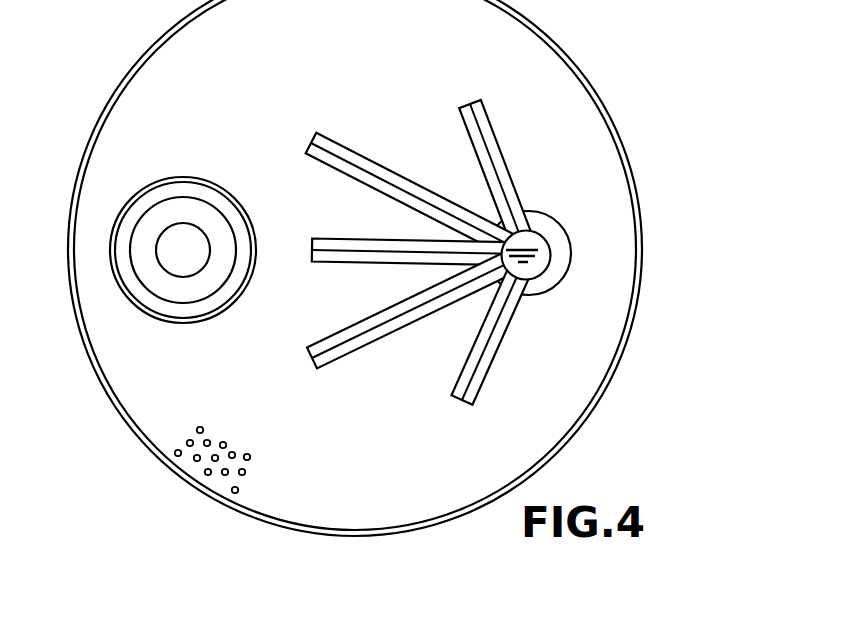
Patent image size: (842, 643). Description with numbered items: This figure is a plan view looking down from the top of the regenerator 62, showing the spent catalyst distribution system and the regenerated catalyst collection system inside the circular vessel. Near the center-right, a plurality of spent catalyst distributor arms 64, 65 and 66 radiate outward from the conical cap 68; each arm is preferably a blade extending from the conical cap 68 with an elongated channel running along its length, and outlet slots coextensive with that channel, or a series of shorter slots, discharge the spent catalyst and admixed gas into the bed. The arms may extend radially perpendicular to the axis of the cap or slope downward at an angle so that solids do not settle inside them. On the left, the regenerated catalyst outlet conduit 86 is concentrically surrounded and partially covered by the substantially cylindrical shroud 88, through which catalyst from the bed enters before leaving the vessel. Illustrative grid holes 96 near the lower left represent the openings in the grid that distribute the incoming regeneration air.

The regenerator 62 is at (590, 90).
The spent catalyst distributor arm 64 is at (318, 238).
The spent catalyst distributor arm 65 is at (310, 146).
The spent catalyst distributor arm 66 is at (464, 102).
The conical cap 68 is at (554, 220).
The regenerated catalyst outlet conduit 86 is at (186, 222).
The shroud 88 is at (138, 191).
The grid holes 96 is at (186, 440).